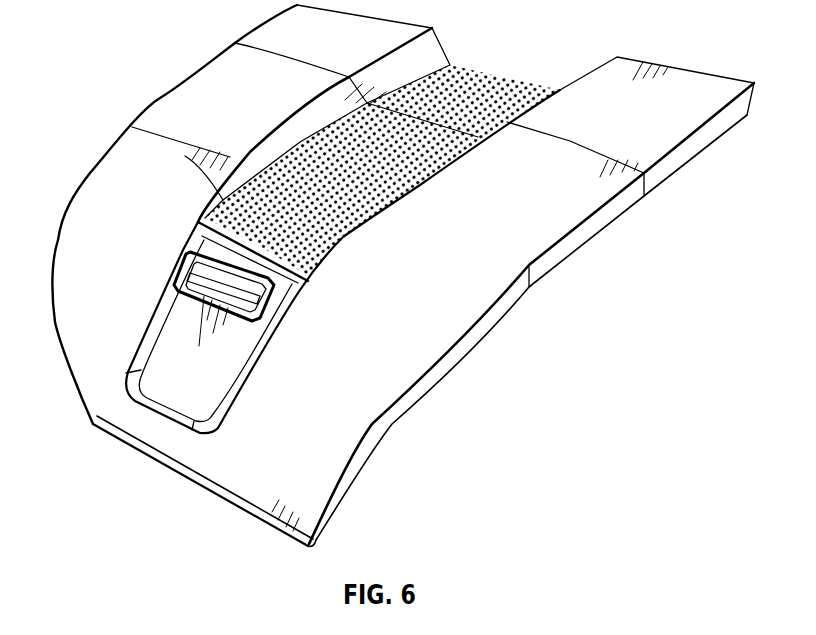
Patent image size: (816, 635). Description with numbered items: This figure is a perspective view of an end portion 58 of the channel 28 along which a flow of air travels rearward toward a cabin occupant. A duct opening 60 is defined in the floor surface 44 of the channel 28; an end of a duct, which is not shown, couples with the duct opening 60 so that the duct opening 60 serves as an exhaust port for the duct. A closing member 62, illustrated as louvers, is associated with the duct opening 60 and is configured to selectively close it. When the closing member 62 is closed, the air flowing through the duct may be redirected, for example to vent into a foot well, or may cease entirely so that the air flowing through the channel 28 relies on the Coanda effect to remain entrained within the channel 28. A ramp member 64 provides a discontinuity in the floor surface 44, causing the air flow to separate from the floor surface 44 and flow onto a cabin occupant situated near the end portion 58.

The channel 28 is at (302, 107).
The floor surface 44 is at (186, 157).
The end portion 58 is at (173, 373).
The duct opening 60 is at (198, 251).
The closing member 62 is at (206, 306).
The ramp member 64 is at (184, 219).